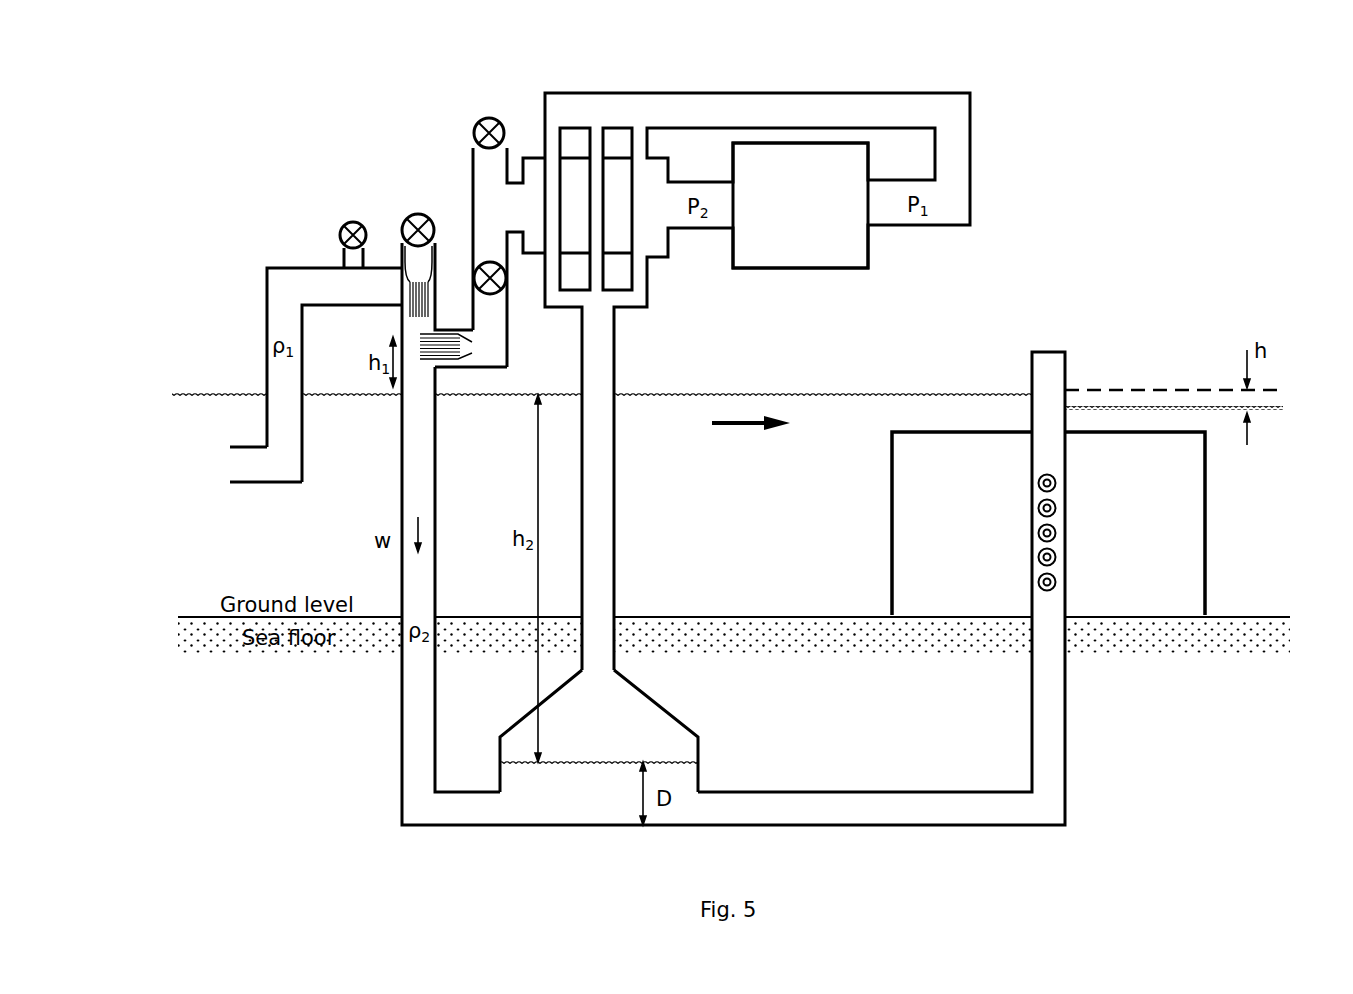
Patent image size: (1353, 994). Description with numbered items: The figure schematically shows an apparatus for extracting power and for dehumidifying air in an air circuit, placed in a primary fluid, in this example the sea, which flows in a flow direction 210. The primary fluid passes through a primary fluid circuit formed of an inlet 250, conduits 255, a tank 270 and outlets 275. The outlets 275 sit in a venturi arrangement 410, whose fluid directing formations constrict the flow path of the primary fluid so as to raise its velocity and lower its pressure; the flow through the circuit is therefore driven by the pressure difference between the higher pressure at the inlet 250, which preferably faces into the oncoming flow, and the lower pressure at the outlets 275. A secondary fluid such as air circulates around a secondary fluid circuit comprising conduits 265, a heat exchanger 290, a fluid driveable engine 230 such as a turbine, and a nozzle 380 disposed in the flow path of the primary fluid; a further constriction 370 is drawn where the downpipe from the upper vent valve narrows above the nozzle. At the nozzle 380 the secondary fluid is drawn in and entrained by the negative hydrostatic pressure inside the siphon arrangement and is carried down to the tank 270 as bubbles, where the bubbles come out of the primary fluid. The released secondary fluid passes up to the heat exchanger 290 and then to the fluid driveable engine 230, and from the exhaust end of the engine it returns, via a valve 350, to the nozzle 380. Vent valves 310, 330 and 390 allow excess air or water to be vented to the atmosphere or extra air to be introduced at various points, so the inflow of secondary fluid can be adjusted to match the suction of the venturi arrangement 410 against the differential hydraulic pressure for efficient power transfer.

The flow direction 210 is at (751, 440).
The fluid driveable engine 230 is at (800, 205).
The inlet 250 is at (253, 465).
The conduits 255 is at (262, 300).
The conduits 265 is at (885, 110).
The tank 270 is at (599, 731).
The outlets 275 is at (1056, 484).
The heat exchanger 290 is at (595, 138).
The vent valve 310 is at (343, 225).
The vent valve 330 is at (417, 214).
The valve 350 is at (503, 290).
The nozzle 370 is at (410, 303).
The nozzle 380 is at (435, 346).
The vent valve 390 is at (488, 118).
The venturi arrangement 410 is at (1048, 523).